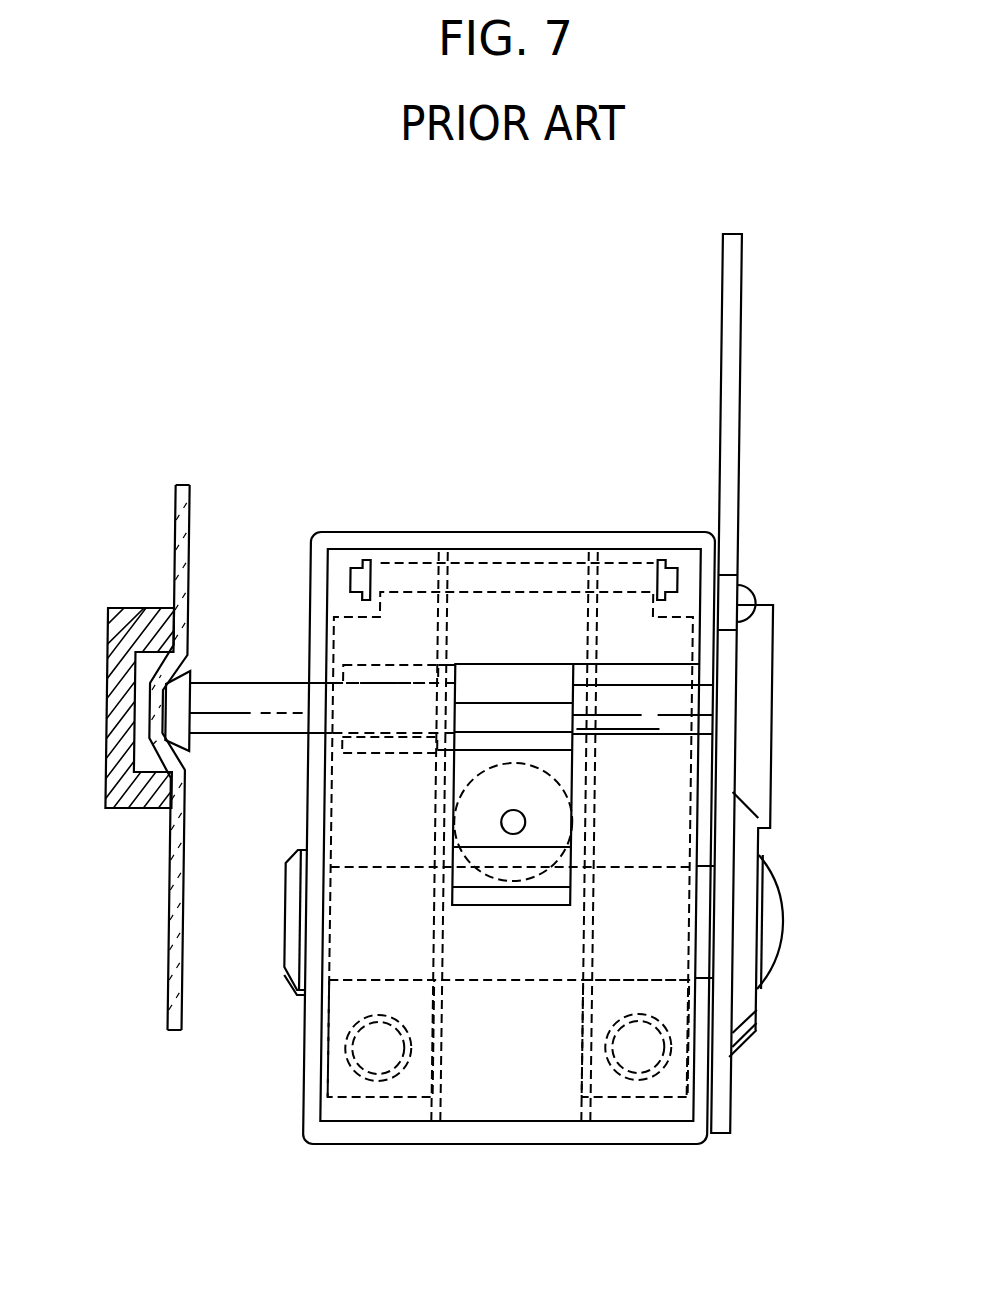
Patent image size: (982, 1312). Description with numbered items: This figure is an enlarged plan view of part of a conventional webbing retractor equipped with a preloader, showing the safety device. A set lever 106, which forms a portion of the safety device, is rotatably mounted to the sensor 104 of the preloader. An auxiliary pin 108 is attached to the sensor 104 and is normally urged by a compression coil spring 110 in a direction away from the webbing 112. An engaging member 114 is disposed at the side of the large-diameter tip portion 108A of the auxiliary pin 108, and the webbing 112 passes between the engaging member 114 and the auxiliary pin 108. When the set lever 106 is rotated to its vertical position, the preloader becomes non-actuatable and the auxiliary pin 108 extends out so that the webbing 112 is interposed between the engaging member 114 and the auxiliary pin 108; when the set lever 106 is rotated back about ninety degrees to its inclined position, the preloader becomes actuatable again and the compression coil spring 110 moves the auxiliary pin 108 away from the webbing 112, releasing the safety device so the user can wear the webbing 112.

The sensor 104 is at (377, 509).
The set lever 106 is at (740, 372).
The auxiliary pin 108 is at (232, 723).
The large-diameter tip portion 108A is at (204, 672).
The compression coil spring 110 is at (370, 753).
The webbing 112 is at (185, 528).
The engaging member 114 is at (117, 752).